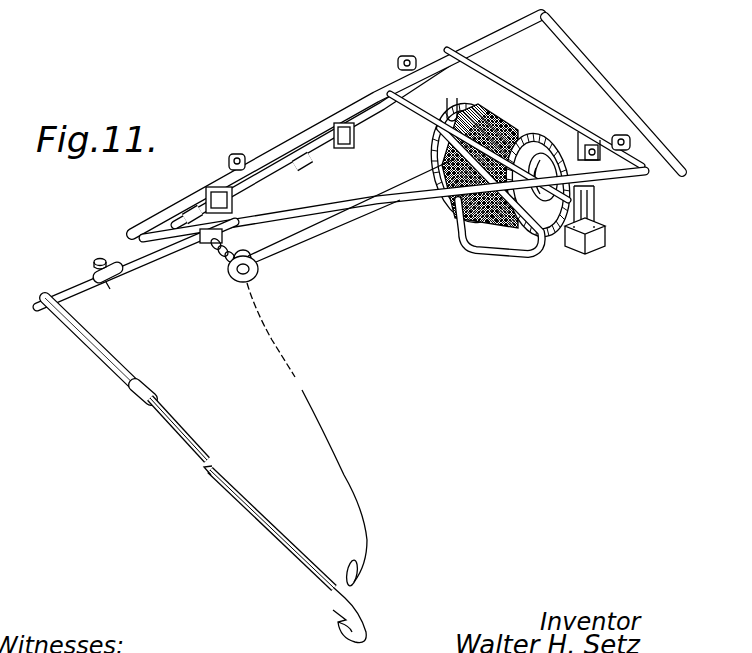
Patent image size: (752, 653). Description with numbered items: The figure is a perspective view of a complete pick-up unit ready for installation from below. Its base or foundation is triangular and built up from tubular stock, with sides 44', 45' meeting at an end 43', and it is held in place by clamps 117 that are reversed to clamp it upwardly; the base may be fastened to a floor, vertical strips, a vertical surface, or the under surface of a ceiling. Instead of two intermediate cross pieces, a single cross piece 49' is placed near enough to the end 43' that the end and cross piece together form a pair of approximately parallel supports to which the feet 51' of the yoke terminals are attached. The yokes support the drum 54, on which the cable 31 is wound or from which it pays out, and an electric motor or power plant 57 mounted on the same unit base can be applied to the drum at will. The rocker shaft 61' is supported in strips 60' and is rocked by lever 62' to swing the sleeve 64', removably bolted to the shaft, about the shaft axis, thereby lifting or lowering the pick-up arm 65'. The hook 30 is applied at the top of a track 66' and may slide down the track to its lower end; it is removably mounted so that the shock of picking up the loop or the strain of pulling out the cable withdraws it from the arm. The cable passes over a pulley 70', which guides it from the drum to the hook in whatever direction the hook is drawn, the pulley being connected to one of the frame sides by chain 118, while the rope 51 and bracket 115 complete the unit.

The clamps 117 is at (238, 156).
The side 45' is at (336, 124).
The end 43' is at (544, 108).
The drum 54 is at (521, 103).
The lever 62' is at (613, 94).
The strips 60' is at (283, 168).
The cross piece 49' is at (483, 169).
The feet of the yoke terminals 51' is at (519, 121).
The electric motor or power plant 57 is at (594, 217).
The U-shaped bracket 115 is at (490, 240).
The side 44' is at (394, 204).
The hoisting rope 51 is at (350, 211).
The rocker shaft 61' is at (136, 264).
The chain 118 is at (211, 258).
The pulley block 70' is at (265, 268).
The sleeve 64' is at (95, 344).
The pick-up arm 65' is at (167, 389).
The track 66' is at (198, 429).
The cable 31 is at (350, 478).
The hook 30 is at (348, 630).